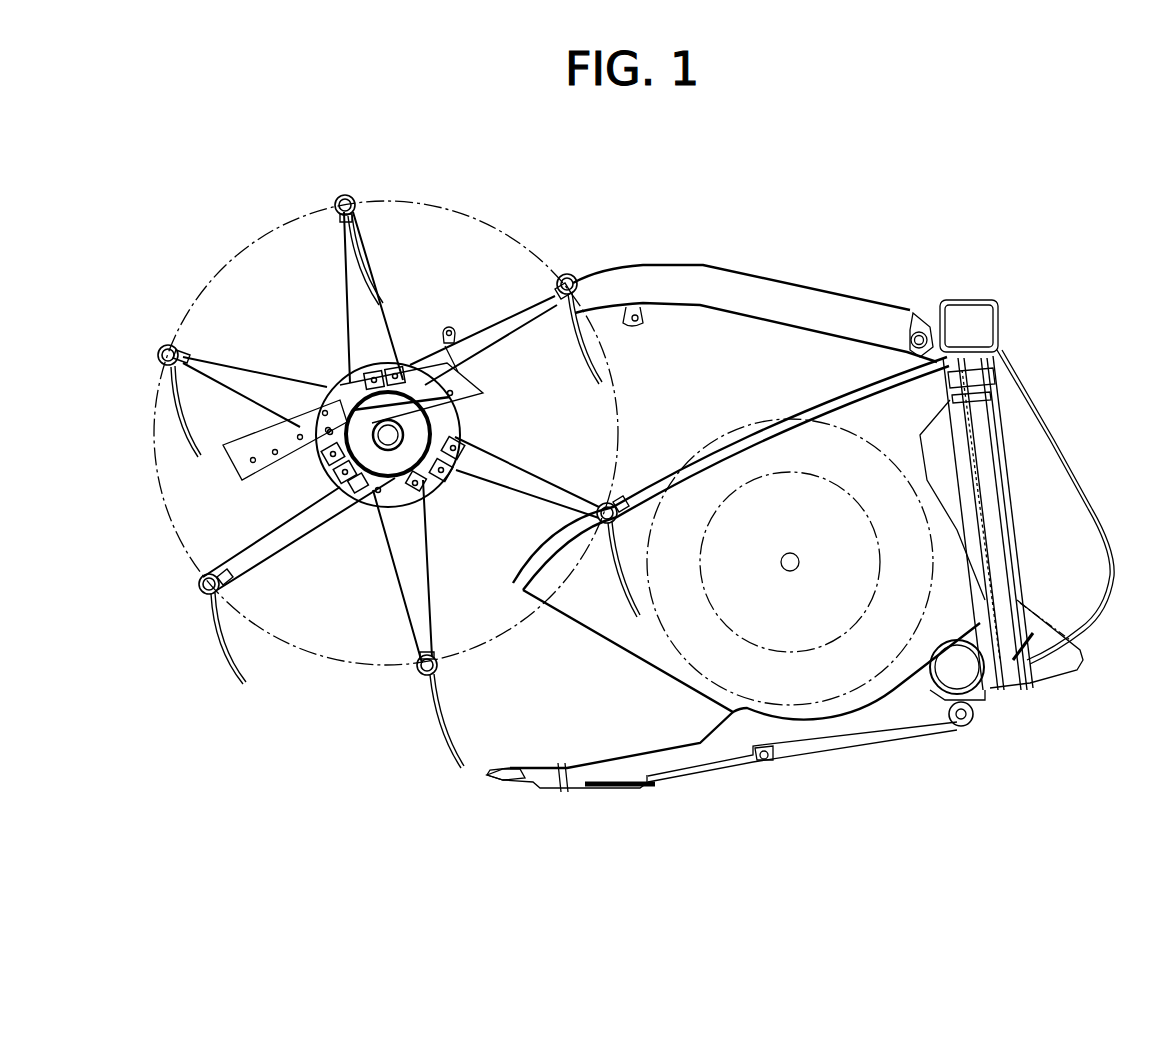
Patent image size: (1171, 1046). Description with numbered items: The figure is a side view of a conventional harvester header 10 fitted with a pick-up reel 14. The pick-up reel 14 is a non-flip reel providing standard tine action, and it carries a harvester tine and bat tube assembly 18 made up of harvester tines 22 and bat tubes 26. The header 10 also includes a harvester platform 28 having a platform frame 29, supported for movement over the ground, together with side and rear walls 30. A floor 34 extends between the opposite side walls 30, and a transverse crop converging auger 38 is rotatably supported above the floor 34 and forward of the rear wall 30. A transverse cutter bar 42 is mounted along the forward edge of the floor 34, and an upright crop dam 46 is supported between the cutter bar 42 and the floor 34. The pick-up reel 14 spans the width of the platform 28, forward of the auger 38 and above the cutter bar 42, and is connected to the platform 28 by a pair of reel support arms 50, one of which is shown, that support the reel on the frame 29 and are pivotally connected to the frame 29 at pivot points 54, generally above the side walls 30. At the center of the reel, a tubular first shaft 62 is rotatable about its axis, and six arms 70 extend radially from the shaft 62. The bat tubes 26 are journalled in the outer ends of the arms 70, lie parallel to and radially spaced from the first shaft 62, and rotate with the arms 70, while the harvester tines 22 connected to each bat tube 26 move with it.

The harvester header 10 is at (789, 504).
The pick-up reel 14 is at (492, 200).
The harvester tine and bat tube assembly 18 is at (348, 193).
The harvester tines 22 is at (362, 282).
The bat tubes 26 is at (362, 208).
The harvester platform 28 is at (1050, 425).
The platform frame 29 is at (1000, 506).
The side and rear wall 30 is at (937, 414).
The floor 34 is at (880, 690).
The transverse crop converging auger 38 is at (850, 430).
The transverse cutter bar 42 is at (497, 780).
The upright crop dam 46 is at (560, 768).
The reel support arms 50 is at (818, 300).
The pivot points 54 is at (918, 327).
The first shaft 62 is at (388, 500).
The arms 70 is at (258, 383).